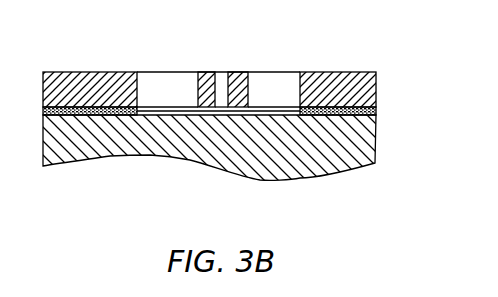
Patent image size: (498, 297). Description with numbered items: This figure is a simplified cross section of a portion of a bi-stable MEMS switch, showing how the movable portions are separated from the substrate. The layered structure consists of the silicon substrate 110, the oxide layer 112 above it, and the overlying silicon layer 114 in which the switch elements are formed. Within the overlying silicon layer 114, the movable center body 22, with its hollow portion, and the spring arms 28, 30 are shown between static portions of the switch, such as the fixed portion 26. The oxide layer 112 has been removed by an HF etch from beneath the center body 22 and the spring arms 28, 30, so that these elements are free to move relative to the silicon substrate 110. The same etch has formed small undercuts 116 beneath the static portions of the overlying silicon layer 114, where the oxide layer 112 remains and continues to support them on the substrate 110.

The center body 22 is at (206, 72).
The fixed portion of the switch 26 is at (338, 72).
The spring arm 28 is at (168, 72).
The spring arm 30 is at (270, 72).
The silicon substrate 110 is at (97, 117).
The oxide layer 112 is at (378, 111).
The overlying silicon layer 114 is at (378, 91).
The undercuts 116 is at (300, 116).